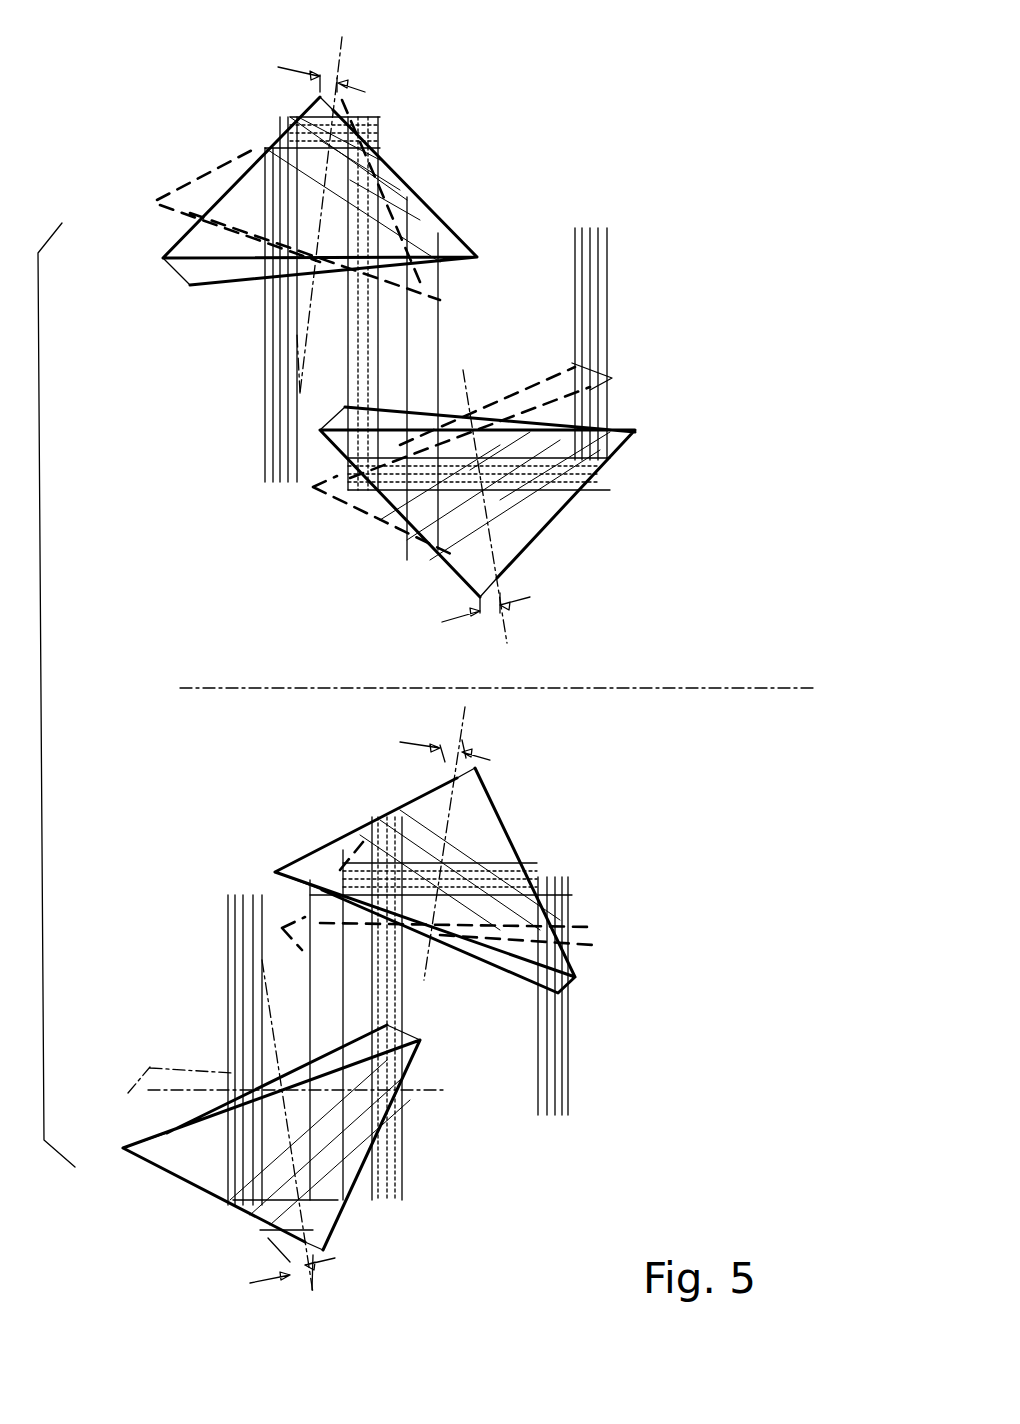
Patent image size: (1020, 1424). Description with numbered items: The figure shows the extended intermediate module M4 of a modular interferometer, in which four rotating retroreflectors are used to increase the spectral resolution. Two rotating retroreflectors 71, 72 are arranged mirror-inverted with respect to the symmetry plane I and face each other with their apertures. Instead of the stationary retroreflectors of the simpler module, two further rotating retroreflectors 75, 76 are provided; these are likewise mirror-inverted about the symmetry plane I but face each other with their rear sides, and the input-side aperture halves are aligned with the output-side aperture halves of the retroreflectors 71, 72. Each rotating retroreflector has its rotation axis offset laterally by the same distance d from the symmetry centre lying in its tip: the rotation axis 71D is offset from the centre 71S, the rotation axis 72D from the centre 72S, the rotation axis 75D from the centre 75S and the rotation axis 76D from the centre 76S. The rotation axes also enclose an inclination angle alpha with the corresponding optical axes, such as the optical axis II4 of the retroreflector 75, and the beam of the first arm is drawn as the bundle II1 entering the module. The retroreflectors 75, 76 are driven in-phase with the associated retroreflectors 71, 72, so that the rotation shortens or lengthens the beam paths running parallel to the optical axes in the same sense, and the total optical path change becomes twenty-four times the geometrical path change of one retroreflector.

The rotating retroreflector 71 is at (150, 245).
The symmetry centre of rotating retroreflector 71S is at (318, 95).
The rotation axis of rotating retroreflector 71D is at (342, 50).
The further rotating retroreflector 75 is at (635, 430).
The symmetry centre of further rotating retroreflector 75S is at (478, 592).
The rotation axis of further rotating retroreflector 75D is at (507, 643).
The further rotating retroreflector 76 is at (578, 975).
The symmetry centre of further rotating retroreflector 76S is at (445, 768).
The rotation axis of further rotating retroreflector 76D is at (465, 712).
The rotating retroreflector 72 is at (124, 1147).
The symmetry centre of rotating retroreflector 72S is at (288, 1260).
The rotation axis of rotating retroreflector 72D is at (315, 1300).
The first light beam II1 is at (247, 955).
The optical axis II4 is at (577, 370).
The axial offset distance d is at (388, 663).
The extended intermediate module M4 is at (766, 163).
The symmetry plane I is at (504, 689).